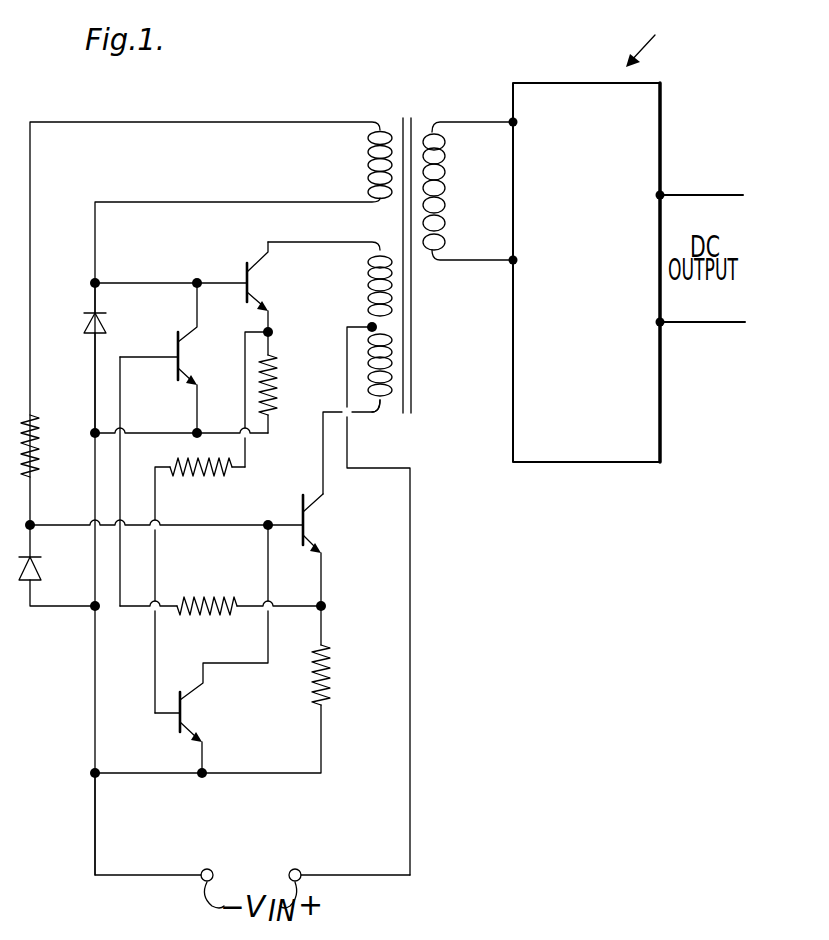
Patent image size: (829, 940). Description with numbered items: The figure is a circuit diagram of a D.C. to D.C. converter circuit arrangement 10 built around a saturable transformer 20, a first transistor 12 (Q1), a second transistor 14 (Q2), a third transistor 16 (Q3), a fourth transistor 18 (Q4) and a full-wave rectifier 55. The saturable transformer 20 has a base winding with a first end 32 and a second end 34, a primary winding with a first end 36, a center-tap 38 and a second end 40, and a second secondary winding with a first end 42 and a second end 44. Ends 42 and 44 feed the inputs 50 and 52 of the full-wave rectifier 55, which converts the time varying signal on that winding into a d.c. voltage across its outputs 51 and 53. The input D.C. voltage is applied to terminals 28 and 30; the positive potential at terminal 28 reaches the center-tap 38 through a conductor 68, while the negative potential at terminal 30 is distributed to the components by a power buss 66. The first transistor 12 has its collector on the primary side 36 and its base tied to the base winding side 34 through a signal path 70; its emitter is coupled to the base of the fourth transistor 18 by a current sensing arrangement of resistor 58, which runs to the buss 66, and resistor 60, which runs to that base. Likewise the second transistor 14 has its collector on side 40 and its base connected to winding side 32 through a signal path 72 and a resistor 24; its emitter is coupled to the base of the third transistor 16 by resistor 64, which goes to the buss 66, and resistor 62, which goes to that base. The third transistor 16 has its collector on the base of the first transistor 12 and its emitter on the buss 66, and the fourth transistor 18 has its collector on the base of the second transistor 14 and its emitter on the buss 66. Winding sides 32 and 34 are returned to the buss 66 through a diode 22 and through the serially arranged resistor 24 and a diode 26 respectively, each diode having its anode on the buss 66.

The circuit arrangement 10 is at (688, 43).
The first transistor 12 is at (287, 287).
The second transistor 14 is at (341, 550).
The third transistor 16 is at (181, 382).
The fourth transistor 18 is at (207, 732).
The saturable transformer 20 is at (421, 112).
The diode 22 is at (106, 318).
The resistor 24 is at (40, 464).
The diode 26 is at (40, 572).
The terminal 28 is at (302, 856).
The terminal 30 is at (207, 868).
The first end of base winding 32 is at (374, 114).
The second end of base winding 34 is at (368, 198).
The first end of primary winding 36 is at (374, 241).
The center-tap 38 is at (370, 328).
The second end of primary winding 40 is at (372, 412).
The first end of second secondary winding 42 is at (478, 120).
The second end of second secondary winding 44 is at (478, 264).
The input of full-wave rectifier 50 is at (527, 127).
The output of full-wave rectifier 51 is at (687, 197).
The input of full-wave rectifier 52 is at (527, 266).
The output of full-wave rectifier 53 is at (684, 327).
The full-wave rectifier 55 is at (598, 178).
The resistor 58 is at (276, 390).
The resistor 60 is at (186, 482).
The resistor 62 is at (207, 580).
The resistor 64 is at (326, 662).
The power buss 66 is at (95, 836).
The conductor 68 is at (323, 875).
The signal path 70 is at (140, 283).
The signal path 72 is at (222, 525).